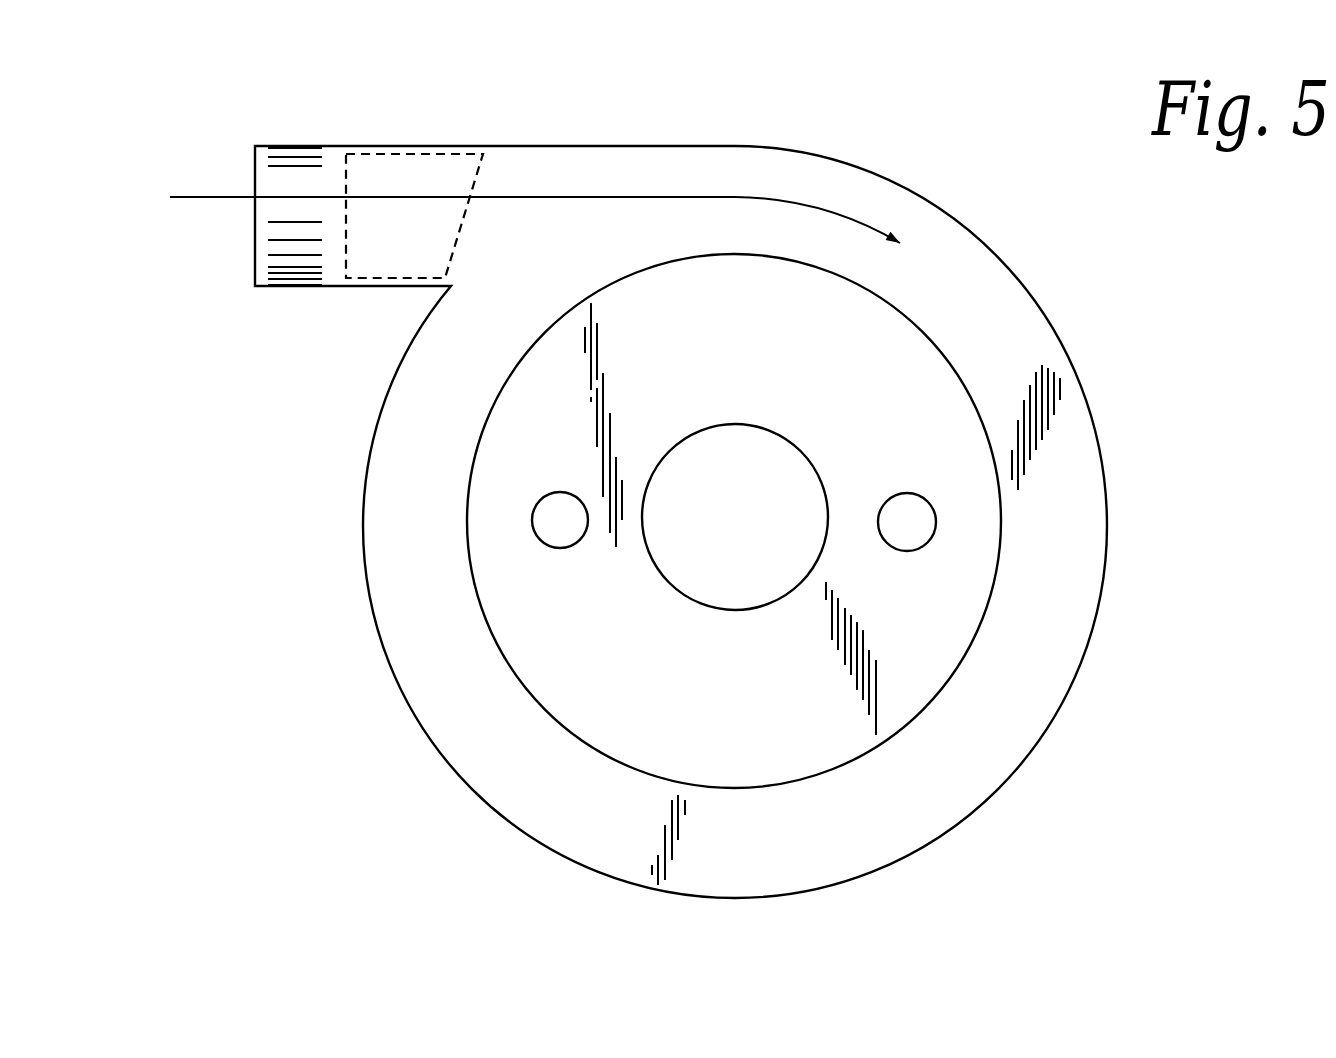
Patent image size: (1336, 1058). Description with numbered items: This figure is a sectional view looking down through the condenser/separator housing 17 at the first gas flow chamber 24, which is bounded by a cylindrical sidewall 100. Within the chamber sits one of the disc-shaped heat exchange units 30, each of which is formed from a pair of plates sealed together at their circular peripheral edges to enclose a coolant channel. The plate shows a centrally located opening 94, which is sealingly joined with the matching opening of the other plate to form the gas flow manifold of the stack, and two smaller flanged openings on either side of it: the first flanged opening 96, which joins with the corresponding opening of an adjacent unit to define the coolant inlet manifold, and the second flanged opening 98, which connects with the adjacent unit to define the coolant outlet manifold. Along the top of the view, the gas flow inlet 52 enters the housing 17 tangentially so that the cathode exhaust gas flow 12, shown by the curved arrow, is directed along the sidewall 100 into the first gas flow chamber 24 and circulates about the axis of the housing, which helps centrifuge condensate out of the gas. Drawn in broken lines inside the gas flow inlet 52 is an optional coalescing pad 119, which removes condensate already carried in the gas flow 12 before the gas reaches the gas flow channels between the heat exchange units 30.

The cathode exhaust gas flow 12 is at (197, 197).
The housing 17 is at (885, 175).
The first gas flow chamber 24 is at (399, 460).
The heat exchange unit 30 is at (546, 711).
The gas flow inlet 52 is at (335, 177).
The centrally located opening 94 is at (678, 590).
The first flanged opening 96 is at (543, 538).
The second flanged opening 98 is at (930, 545).
The cylindrical sidewall 100 is at (378, 624).
The coalescing pad 119 is at (420, 175).